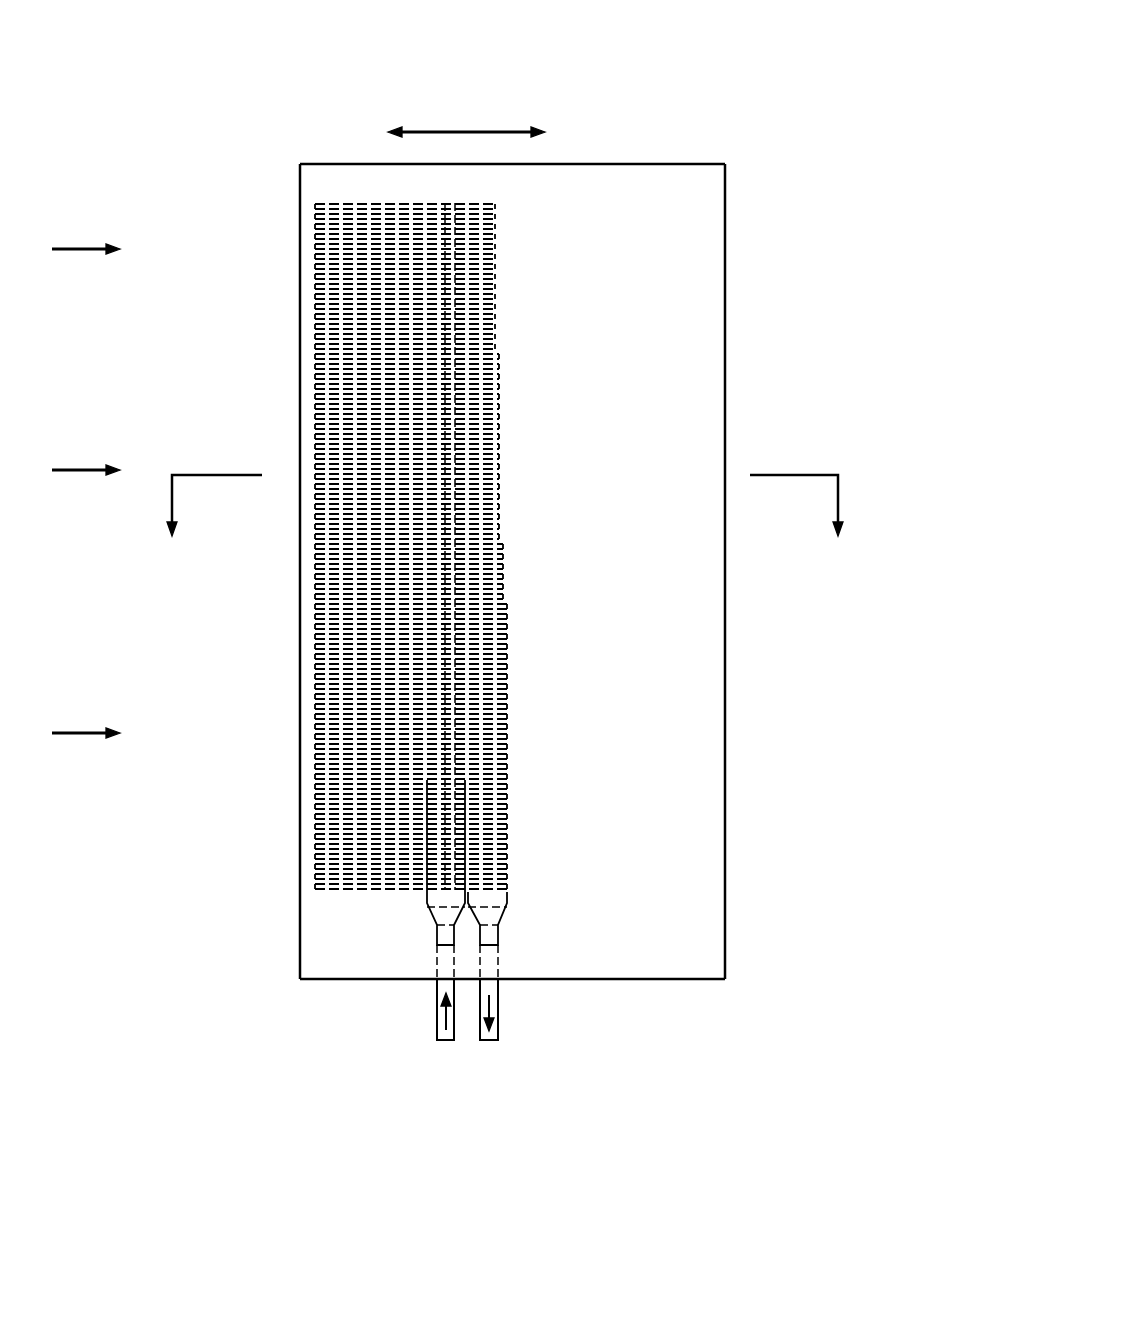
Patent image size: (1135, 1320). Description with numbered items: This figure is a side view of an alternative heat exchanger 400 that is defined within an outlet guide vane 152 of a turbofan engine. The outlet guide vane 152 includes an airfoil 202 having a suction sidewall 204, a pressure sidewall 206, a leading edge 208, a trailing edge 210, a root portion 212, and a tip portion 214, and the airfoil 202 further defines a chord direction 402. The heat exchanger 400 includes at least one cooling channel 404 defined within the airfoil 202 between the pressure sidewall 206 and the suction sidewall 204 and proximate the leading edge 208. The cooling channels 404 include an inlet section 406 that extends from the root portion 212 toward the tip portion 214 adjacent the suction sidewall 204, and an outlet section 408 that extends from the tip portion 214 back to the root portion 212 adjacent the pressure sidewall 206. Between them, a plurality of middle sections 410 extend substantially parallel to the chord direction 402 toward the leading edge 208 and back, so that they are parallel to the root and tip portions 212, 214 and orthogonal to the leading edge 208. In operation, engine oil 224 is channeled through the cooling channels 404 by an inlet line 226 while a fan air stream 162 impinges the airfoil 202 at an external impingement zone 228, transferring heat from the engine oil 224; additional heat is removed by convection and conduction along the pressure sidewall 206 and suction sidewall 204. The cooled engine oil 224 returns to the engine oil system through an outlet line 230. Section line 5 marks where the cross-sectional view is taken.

The heat exchanger 400 is at (832, 45).
The outlet guide vane 152 is at (735, 111).
The airfoil 202 is at (675, 281).
The suction sidewall 204 is at (697, 628).
The pressure sidewall 206 is at (300, 758).
The leading edge 208 is at (300, 588).
The trailing edge 210 is at (727, 766).
The root portion 212 is at (683, 983).
The tip portion 214 is at (640, 163).
The engine oil 224 is at (437, 1000).
The inlet line 226 is at (437, 1035).
The impingement zone 228 is at (318, 175).
The outlet line 230 is at (498, 1032).
The fan air stream 162 is at (60, 244).
The chord direction 402 is at (466, 129).
The cooling channel 404 is at (318, 370).
The inlet section 406 is at (425, 903).
The outlet section 408 is at (510, 903).
The middle section 410 is at (312, 838).
The section line 5- 5 is at (505, 519).